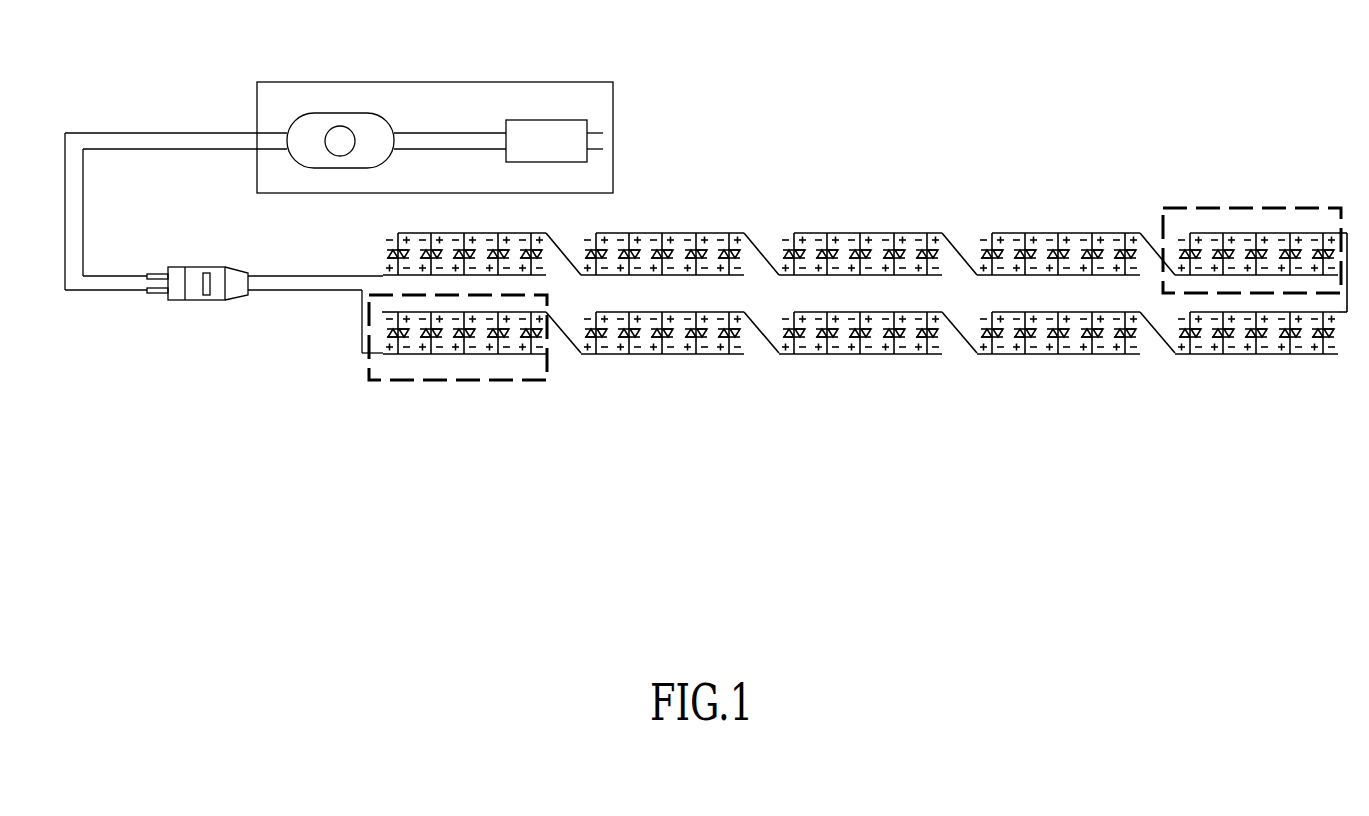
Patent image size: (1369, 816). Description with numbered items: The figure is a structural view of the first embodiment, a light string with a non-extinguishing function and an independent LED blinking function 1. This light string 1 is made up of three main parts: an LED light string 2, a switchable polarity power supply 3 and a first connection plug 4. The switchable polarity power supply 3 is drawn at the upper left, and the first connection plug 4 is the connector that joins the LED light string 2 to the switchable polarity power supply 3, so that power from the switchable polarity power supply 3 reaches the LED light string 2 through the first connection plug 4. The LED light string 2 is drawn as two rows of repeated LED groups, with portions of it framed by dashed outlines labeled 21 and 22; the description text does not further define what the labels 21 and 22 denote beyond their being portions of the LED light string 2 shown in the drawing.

The light string with a non-extinguishing function and an independent LED blinking f 1 is at (868, 115).
The LED light string 2 is at (970, 207).
The light emitting unit 21 is at (677, 232).
The light emitting unit 22 is at (1232, 208).
The switchable polarity power supply 3 is at (438, 82).
The first connection plug 4 is at (212, 300).